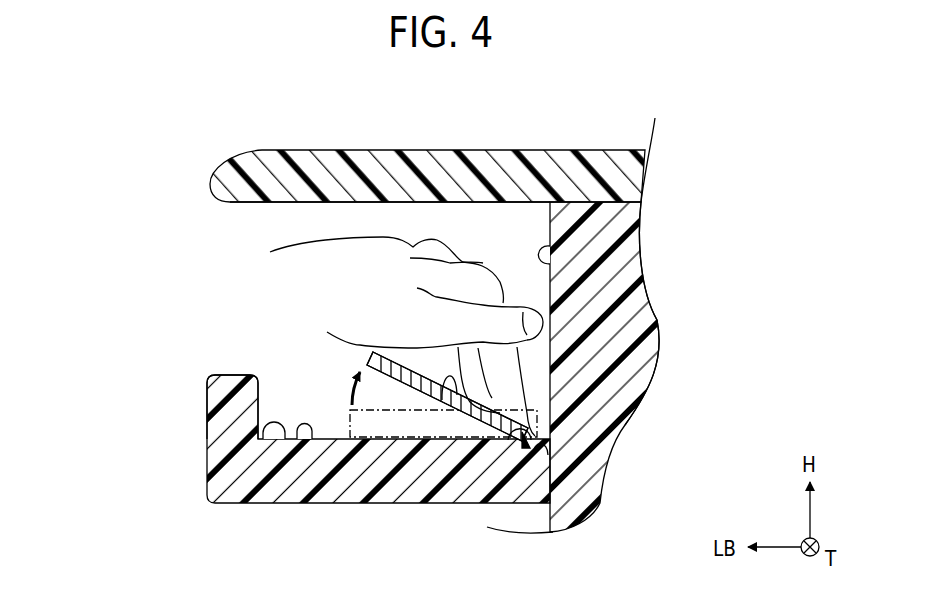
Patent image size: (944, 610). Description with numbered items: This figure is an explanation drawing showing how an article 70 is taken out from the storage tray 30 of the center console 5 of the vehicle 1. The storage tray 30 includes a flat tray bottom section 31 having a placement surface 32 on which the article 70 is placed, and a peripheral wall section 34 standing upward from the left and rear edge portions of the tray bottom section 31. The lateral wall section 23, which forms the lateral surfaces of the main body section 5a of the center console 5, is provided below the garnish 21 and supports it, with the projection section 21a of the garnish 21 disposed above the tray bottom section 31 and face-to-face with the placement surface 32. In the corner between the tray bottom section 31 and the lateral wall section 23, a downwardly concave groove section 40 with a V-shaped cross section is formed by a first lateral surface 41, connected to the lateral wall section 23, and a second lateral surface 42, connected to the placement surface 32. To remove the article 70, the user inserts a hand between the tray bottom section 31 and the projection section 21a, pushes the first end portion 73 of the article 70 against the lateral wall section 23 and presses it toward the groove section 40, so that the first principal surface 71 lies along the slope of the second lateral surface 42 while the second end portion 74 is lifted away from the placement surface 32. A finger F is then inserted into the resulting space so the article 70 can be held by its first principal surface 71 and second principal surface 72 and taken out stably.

The vehicle 1 is at (205, 148).
The center console 5 is at (531, 226).
The main body section 5a is at (600, 220).
The garnish 21 is at (551, 168).
The projection section 21a is at (313, 166).
The lateral wall section 23 is at (553, 263).
The storage tray 30 is at (201, 447).
The tray bottom section 31 is at (266, 440).
The placement surface 32 is at (302, 440).
The peripheral wall section 34 is at (215, 401).
The groove section 40 is at (555, 412).
The first lateral surface 41 is at (542, 450).
The second lateral surface 42 is at (520, 442).
The article 70 is at (386, 390).
The first principal surface 71 is at (412, 392).
The second principal surface 72 is at (442, 400).
The first end portion 73 is at (528, 456).
The second end portion 74 is at (355, 372).
The finger F is at (510, 370).